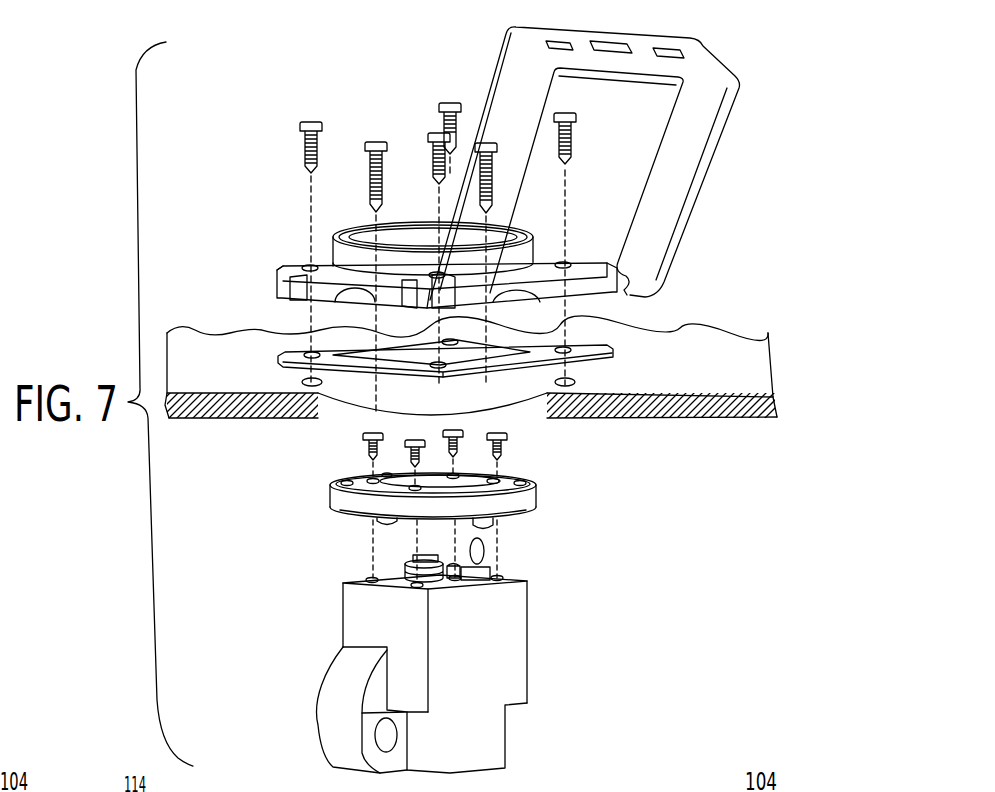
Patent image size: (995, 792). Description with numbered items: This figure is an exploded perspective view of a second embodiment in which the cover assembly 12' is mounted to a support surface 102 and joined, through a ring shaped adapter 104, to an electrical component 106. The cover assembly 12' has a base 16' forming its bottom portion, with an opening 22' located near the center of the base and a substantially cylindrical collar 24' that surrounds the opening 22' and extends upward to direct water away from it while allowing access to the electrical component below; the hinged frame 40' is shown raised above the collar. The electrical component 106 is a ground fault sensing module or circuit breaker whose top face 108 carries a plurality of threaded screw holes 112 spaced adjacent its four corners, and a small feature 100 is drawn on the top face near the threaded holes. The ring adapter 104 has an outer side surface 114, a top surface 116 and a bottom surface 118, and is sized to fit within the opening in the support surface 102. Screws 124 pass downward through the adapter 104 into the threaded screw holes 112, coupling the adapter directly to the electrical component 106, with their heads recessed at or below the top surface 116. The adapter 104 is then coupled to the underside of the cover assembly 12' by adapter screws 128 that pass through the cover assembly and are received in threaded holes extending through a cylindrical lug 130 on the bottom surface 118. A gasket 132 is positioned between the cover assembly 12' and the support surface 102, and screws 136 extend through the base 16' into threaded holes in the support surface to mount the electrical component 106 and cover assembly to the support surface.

The cover assembly 12' is at (493, 220).
The base 16' is at (479, 293).
The opening 22' is at (433, 205).
The collar 24' is at (381, 220).
The hinged frame 40' is at (601, 163).
The valve assembly 100 is at (488, 558).
The support surface 102 is at (725, 343).
The ring adapter 104 is at (545, 489).
The electrical component 106 is at (527, 649).
The top face 108 is at (515, 572).
The threaded screw holes 112 is at (370, 578).
The outer side surface 114 is at (330, 498).
The top surface 116 is at (507, 478).
The bottom surface 118 is at (355, 518).
The screws 124 is at (365, 446).
The adapter screws 128 is at (366, 147).
The cylindrical lug 130 is at (497, 535).
The gasket 132 is at (617, 352).
The screws 136 is at (300, 128).